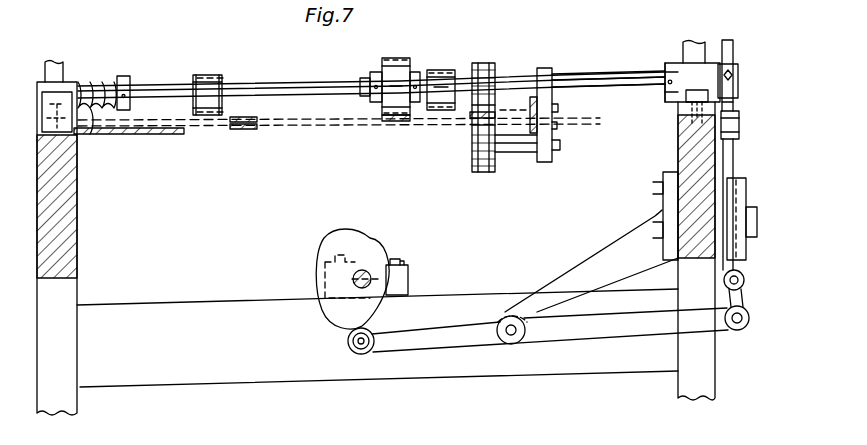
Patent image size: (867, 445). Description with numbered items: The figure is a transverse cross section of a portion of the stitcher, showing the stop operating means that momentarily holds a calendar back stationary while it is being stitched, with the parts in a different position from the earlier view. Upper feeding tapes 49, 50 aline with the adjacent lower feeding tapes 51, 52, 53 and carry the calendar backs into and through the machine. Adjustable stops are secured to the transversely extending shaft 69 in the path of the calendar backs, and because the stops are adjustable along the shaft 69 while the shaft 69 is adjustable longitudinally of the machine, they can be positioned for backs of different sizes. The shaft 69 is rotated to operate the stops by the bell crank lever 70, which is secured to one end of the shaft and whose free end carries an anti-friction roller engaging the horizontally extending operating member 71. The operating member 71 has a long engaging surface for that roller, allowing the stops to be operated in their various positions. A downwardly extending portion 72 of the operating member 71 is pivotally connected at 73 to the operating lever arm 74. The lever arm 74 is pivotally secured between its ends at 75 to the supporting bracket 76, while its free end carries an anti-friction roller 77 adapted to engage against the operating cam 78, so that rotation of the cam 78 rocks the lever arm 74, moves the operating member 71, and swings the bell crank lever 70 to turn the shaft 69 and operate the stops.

The feeding tape 49 is at (383, 118).
The feeding tape 50 is at (469, 112).
The lower feeding tape 51 is at (268, 124).
The lower feeding tape 52 is at (397, 125).
The lower feeding tape 53 is at (478, 122).
The transversely extending shaft 69 is at (598, 82).
The bell crank lever 70 is at (737, 92).
The operating member 71 is at (741, 125).
The downwardly extending portion 72 is at (738, 172).
The pivotal connection 73 is at (750, 318).
The operating lever arm 74 is at (601, 330).
The pivot 75 is at (511, 344).
The supporting bracket 76 is at (580, 280).
The anti-friction roller 77 is at (348, 342).
The operating cam 78 is at (336, 245).